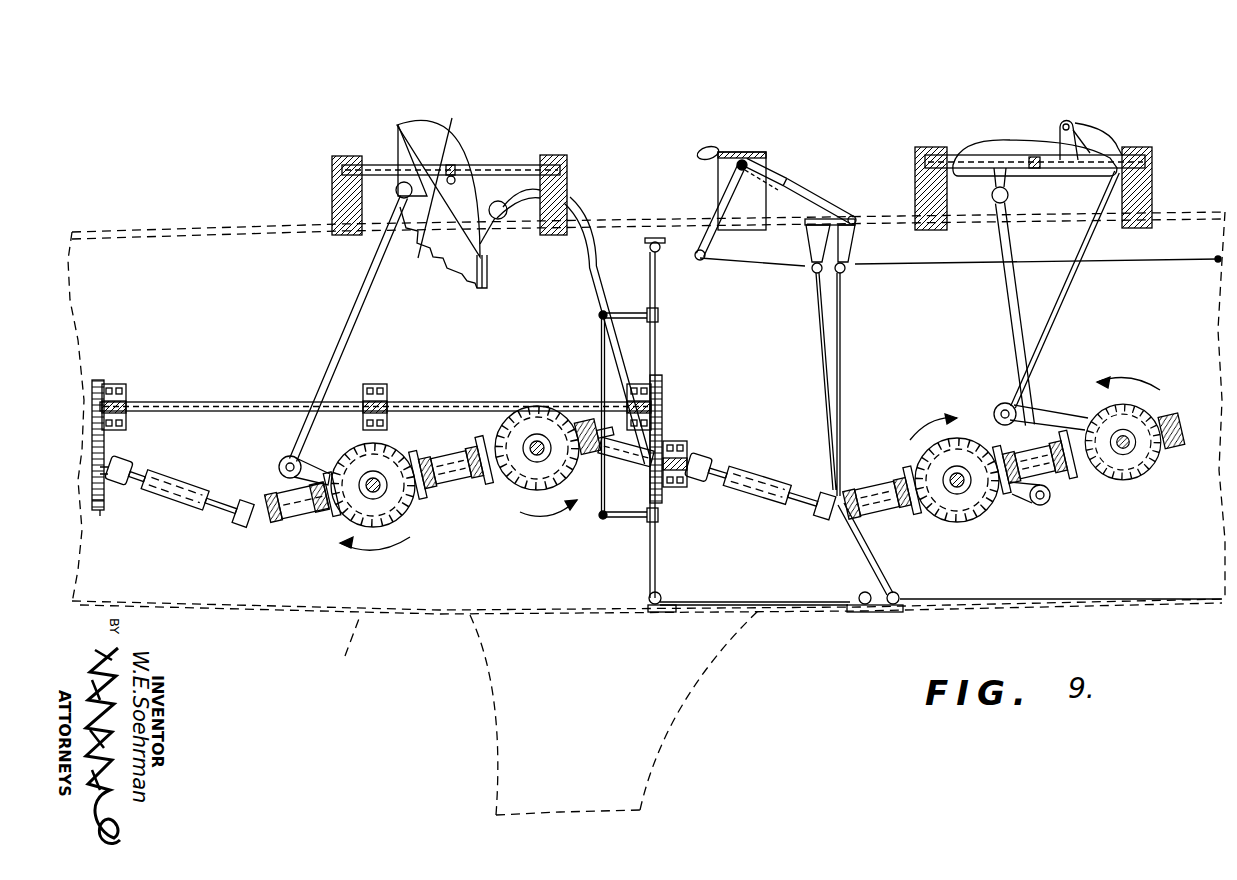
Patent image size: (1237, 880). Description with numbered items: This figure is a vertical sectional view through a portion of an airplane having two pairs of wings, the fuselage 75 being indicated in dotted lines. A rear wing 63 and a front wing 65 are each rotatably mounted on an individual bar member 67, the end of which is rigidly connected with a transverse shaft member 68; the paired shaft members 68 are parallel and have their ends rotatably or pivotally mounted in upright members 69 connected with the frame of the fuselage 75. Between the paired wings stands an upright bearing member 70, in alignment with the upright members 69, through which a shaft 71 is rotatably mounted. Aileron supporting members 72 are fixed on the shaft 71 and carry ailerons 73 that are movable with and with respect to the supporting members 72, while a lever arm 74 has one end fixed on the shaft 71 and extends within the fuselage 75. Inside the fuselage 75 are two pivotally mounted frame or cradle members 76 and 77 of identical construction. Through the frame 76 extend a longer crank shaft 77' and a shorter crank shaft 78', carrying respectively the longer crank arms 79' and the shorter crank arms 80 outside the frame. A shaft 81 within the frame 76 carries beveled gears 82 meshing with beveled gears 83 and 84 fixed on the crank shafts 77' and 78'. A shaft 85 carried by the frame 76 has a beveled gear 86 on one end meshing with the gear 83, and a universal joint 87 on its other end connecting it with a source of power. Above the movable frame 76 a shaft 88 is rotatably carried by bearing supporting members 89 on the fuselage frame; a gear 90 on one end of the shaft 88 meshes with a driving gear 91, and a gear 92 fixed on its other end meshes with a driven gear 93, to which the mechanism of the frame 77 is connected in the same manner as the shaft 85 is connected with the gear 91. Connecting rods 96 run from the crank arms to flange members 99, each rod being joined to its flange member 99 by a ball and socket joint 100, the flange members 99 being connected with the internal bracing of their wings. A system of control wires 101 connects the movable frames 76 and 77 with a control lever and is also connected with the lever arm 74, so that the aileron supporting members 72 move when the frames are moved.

The wing 63 is at (998, 145).
The wing 65 is at (428, 120).
The bar member 67 is at (1042, 170).
The shaft member 68 is at (515, 165).
The upright member 69 is at (566, 165).
The bearing member 70 is at (762, 152).
The shaft 71 is at (737, 166).
The aileron supporting member 72 is at (708, 147).
The aileron 73 is at (822, 193).
The lever arm 74 is at (730, 196).
The fuselage 75 is at (646, 513).
The frame member 76 is at (302, 517).
The frame member 77 is at (881, 508).
The crank shaft 77' is at (533, 488).
The crank shaft 78' is at (391, 497).
The crank arm 79' is at (575, 492).
The crank arm 80 is at (336, 448).
The shaft 81 is at (467, 463).
The beveled gear 82 is at (492, 436).
The beveled gear 83 is at (406, 518).
The beveled gear 84 is at (506, 440).
The shaft 85 is at (280, 522).
The beveled gear 86 is at (337, 522).
The universal joint 87 is at (250, 504).
The shaft 88 is at (233, 412).
The bearing supporting member 89 is at (126, 394).
The gear 90 is at (106, 385).
The driving gear 91 is at (101, 512).
The gear 92 is at (665, 392).
The driven gear 93 is at (690, 443).
The connecting rod 96 is at (350, 306).
The flange member 99 is at (518, 277).
The ball and socket joint 100 is at (494, 200).
The control wire 101 is at (905, 265).